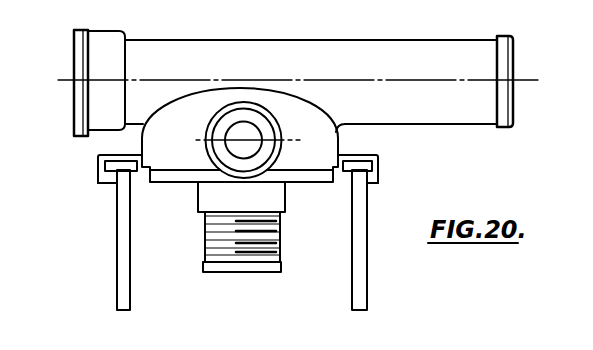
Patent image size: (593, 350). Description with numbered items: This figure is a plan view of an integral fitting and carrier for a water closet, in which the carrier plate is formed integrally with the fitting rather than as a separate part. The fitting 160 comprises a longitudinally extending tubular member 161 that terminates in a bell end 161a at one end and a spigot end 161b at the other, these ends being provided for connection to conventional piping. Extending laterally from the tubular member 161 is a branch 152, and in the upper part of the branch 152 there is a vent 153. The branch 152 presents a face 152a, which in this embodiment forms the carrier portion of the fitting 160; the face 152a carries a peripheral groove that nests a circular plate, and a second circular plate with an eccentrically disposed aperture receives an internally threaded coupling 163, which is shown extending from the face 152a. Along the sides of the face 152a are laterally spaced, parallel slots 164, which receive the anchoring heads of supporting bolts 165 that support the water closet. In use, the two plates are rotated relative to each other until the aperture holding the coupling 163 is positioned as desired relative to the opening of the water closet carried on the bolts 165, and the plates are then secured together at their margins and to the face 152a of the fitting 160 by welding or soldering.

The fitting 160 is at (424, 124).
The tubular member 161 is at (383, 42).
The bell end 161a is at (76, 118).
The spigot end 161b is at (513, 104).
The branch 152 is at (325, 117).
The face 152a is at (303, 183).
The vent 153 is at (272, 128).
The internally threaded coupling 163 is at (279, 272).
The slots 164 is at (99, 183).
The supporting bolts 165 is at (116, 251).